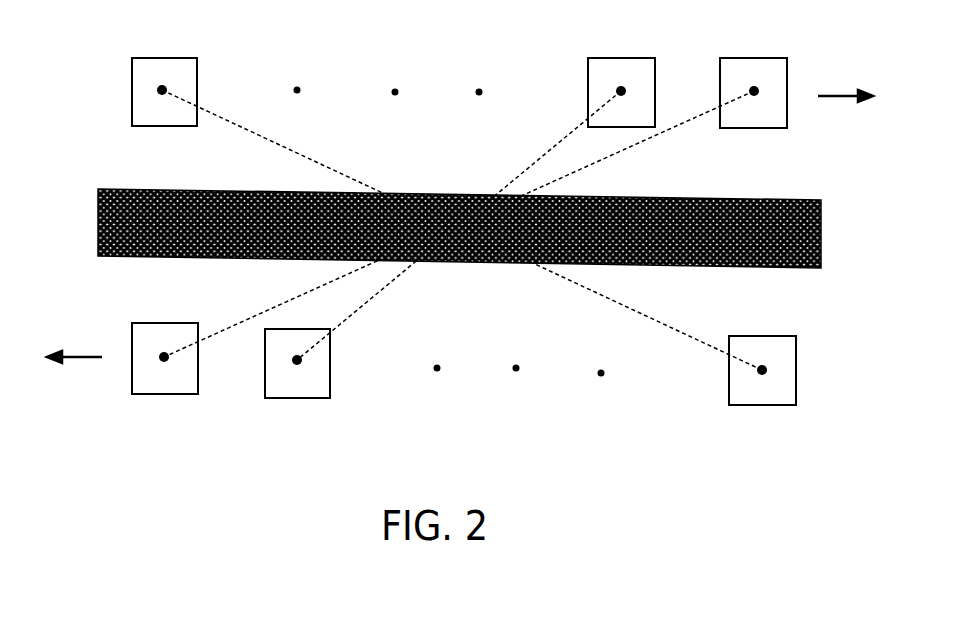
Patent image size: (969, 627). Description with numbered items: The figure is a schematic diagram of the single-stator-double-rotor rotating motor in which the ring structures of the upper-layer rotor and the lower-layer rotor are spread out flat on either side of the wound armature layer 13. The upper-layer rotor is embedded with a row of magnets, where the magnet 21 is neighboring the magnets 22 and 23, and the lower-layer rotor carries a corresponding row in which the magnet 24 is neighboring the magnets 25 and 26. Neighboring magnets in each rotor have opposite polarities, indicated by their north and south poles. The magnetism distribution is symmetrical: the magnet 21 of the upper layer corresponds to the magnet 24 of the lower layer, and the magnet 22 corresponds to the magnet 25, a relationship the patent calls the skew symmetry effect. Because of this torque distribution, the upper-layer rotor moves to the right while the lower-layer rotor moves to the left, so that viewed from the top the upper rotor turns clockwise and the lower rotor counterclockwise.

The armature layer 13 is at (822, 243).
The magnet 21 is at (781, 58).
The magnet 22 is at (588, 70).
The magnet 23 is at (197, 68).
The magnet 24 is at (132, 337).
The magnet 25 is at (330, 388).
The magnet 26 is at (796, 352).